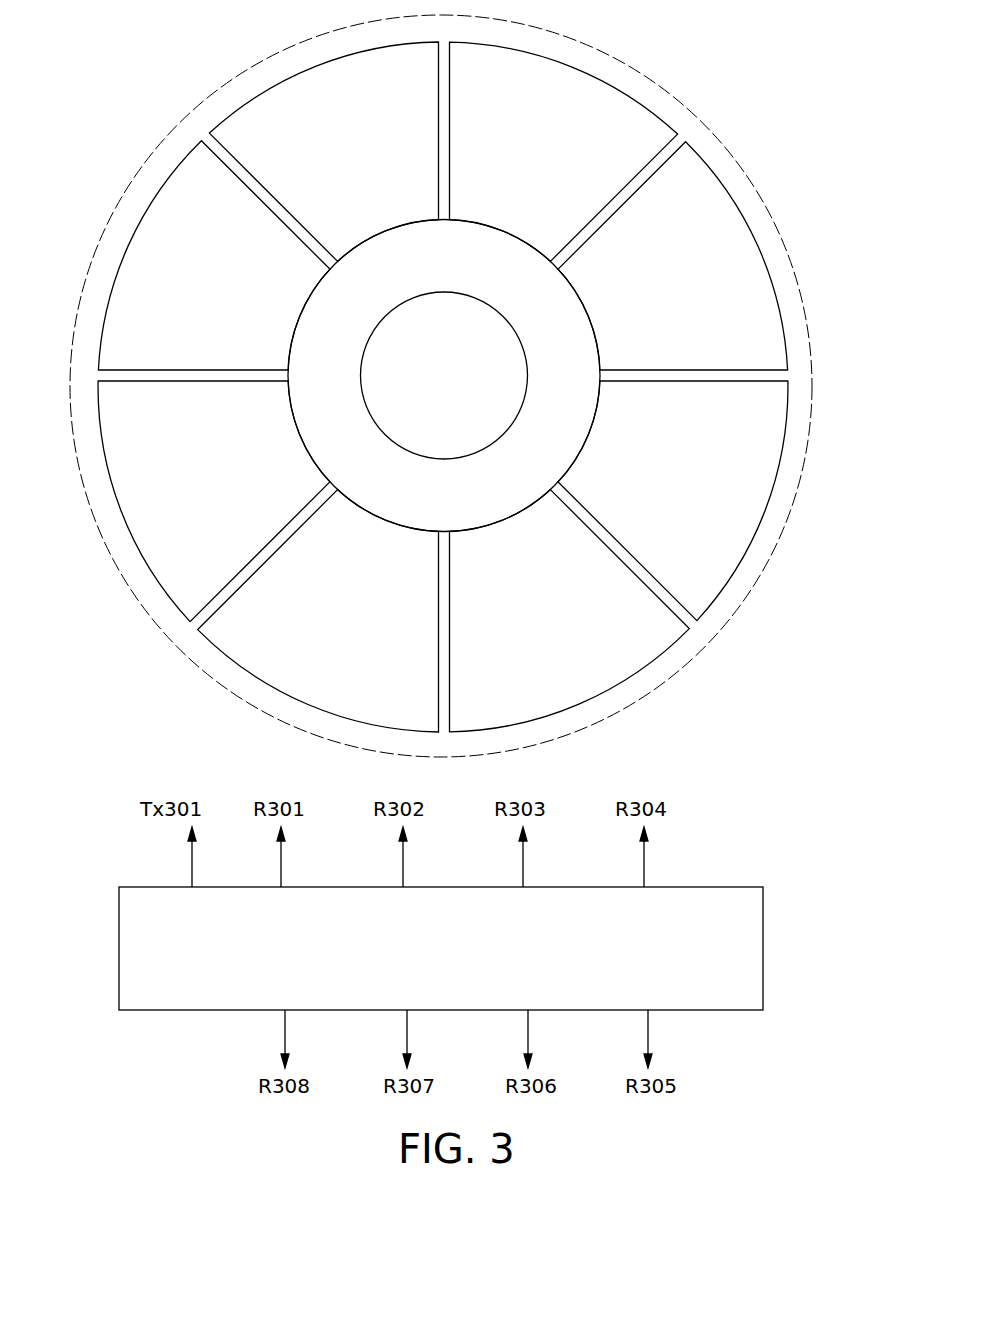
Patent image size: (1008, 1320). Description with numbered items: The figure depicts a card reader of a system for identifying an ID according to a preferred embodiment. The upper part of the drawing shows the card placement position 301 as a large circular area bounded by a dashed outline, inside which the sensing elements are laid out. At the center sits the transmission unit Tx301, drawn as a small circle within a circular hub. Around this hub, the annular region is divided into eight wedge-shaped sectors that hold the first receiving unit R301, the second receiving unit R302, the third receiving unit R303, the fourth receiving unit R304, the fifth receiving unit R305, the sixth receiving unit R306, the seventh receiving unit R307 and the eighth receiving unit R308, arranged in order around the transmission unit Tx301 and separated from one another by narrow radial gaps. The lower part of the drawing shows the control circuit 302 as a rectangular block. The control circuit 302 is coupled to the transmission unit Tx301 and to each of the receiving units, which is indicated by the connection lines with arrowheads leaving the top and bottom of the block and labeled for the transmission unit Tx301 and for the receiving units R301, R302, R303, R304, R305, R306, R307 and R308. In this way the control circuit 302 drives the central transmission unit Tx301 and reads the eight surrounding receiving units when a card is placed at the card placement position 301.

The card placement position 301 is at (753, 185).
The control circuit 302 is at (763, 945).
The transmission unit Tx301 is at (444, 376).
The first receiving unit R301 is at (214, 255).
The second receiving unit R302 is at (323, 151).
The third receiving unit R303 is at (564, 151).
The fourth receiving unit R304 is at (673, 256).
The fifth receiving unit R305 is at (673, 501).
The sixth receiving unit R306 is at (570, 611).
The seventh receiving unit R307 is at (318, 611).
The eighth receiving unit R308 is at (214, 501).